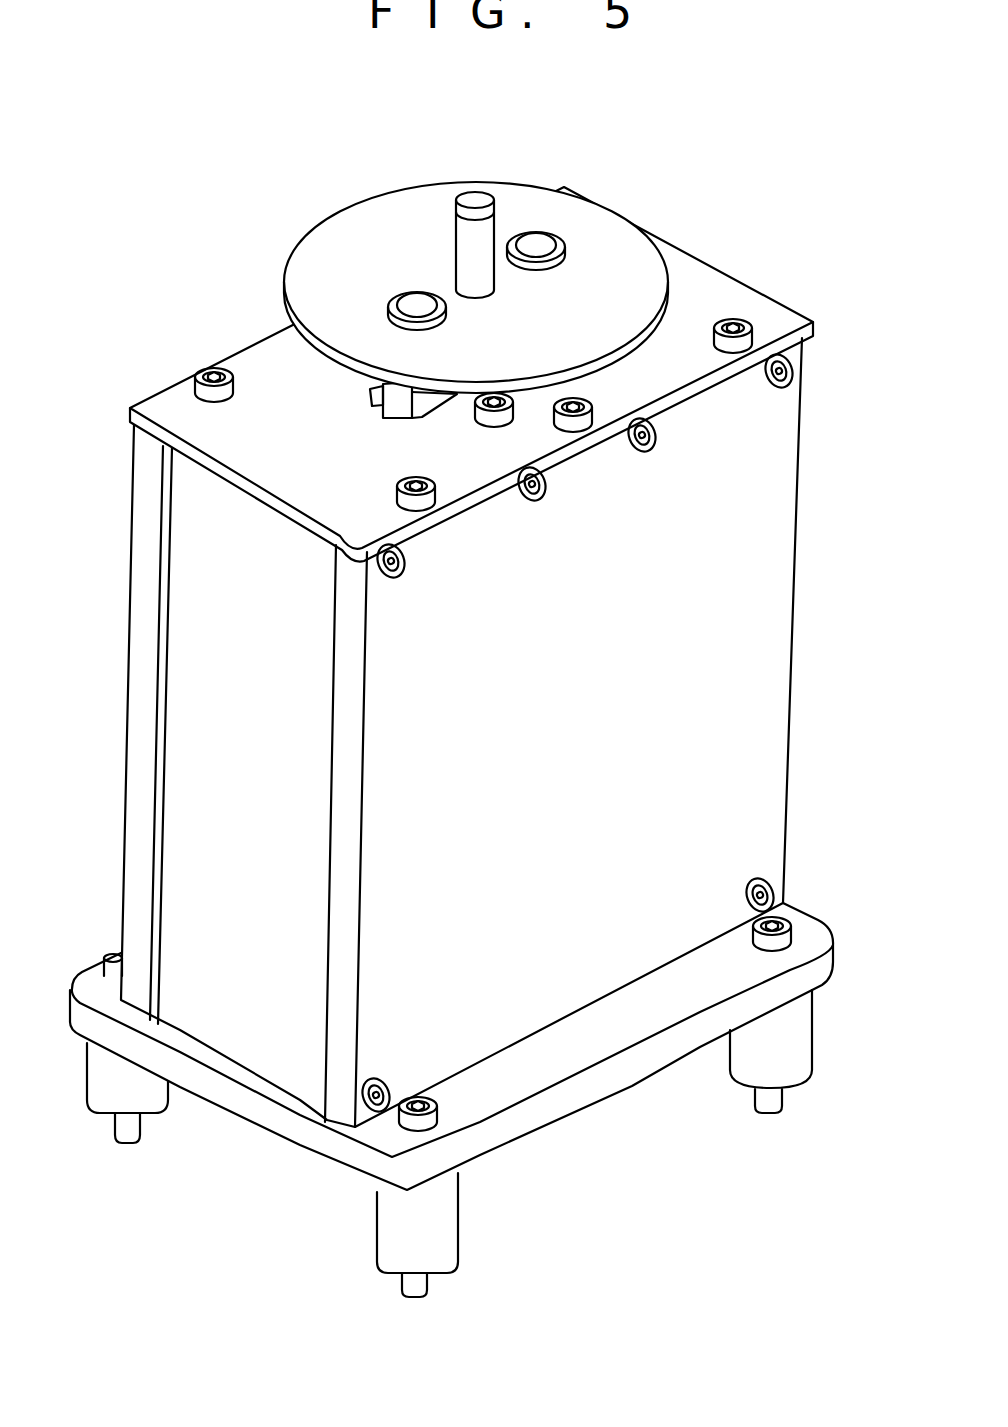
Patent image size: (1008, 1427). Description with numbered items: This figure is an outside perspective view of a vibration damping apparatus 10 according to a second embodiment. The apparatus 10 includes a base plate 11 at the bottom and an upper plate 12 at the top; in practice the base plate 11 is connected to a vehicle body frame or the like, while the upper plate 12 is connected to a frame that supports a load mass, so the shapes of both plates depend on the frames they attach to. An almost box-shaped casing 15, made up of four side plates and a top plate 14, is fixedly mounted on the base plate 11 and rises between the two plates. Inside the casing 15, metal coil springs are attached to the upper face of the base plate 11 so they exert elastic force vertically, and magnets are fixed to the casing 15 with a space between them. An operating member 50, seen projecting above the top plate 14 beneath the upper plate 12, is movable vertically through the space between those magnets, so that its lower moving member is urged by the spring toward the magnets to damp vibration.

The vibration damping apparatus 10 is at (488, 711).
The base plate 11 is at (528, 1120).
The upper plate 12 is at (392, 208).
The top plate 14 is at (728, 288).
The casing 15 is at (772, 708).
The operating member 50 is at (393, 403).